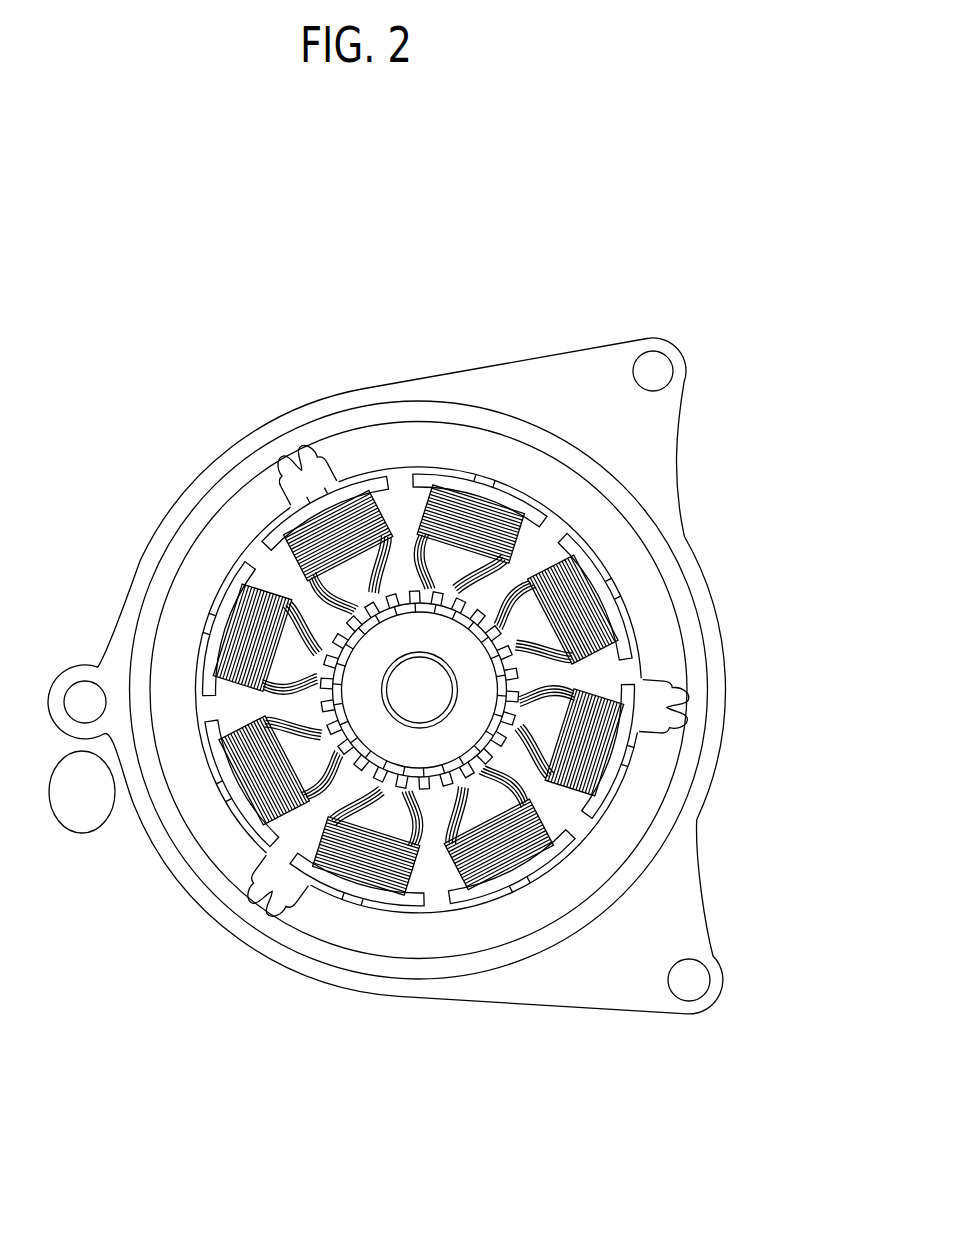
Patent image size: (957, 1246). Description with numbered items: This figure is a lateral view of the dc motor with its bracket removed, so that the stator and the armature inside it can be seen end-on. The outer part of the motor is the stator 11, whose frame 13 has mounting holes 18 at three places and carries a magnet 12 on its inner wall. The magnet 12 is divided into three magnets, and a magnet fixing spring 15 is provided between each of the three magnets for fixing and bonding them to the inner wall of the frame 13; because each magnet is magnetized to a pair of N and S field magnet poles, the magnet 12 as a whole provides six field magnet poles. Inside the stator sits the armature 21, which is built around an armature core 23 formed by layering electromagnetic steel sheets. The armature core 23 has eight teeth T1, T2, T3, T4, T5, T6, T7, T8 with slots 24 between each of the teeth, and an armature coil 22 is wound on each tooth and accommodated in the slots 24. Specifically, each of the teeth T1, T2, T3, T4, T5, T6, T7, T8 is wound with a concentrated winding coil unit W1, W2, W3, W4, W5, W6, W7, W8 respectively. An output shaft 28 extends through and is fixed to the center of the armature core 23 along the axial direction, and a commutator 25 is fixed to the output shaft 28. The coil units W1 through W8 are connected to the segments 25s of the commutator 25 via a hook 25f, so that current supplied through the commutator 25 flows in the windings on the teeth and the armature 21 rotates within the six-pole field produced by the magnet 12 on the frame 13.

The stator 11 is at (498, 368).
The magnet 12 is at (381, 447).
The frame 13 is at (539, 380).
The magnet fixing spring 15 is at (305, 463).
The mounting holes 18 is at (690, 985).
The armature 21 is at (421, 692).
The armature coil 22 is at (518, 620).
The armature core 23 is at (568, 584).
The slots 24 is at (283, 578).
The commutator 25 is at (475, 685).
The hook 25f is at (520, 708).
The segments 25s is at (520, 716).
The output shaft 28 is at (470, 893).
The tooth T1 is at (490, 497).
The tooth T2 is at (571, 548).
The tooth T3 is at (628, 704).
The tooth T4 is at (576, 846).
The tooth T5 is at (413, 905).
The tooth T6 is at (275, 838).
The tooth T7 is at (225, 612).
The tooth T8 is at (325, 497).
The concentrated winding coil unit W1 is at (480, 530).
The concentrated winding coil unit W2 is at (585, 615).
The concentrated winding coil unit W3 is at (600, 715).
The concentrated winding coil unit W4 is at (520, 848).
The concentrated winding coil unit W5 is at (372, 868).
The concentrated winding coil unit W6 is at (262, 794).
The concentrated winding coil unit W7 is at (262, 606).
The concentrated winding coil unit W8 is at (348, 523).